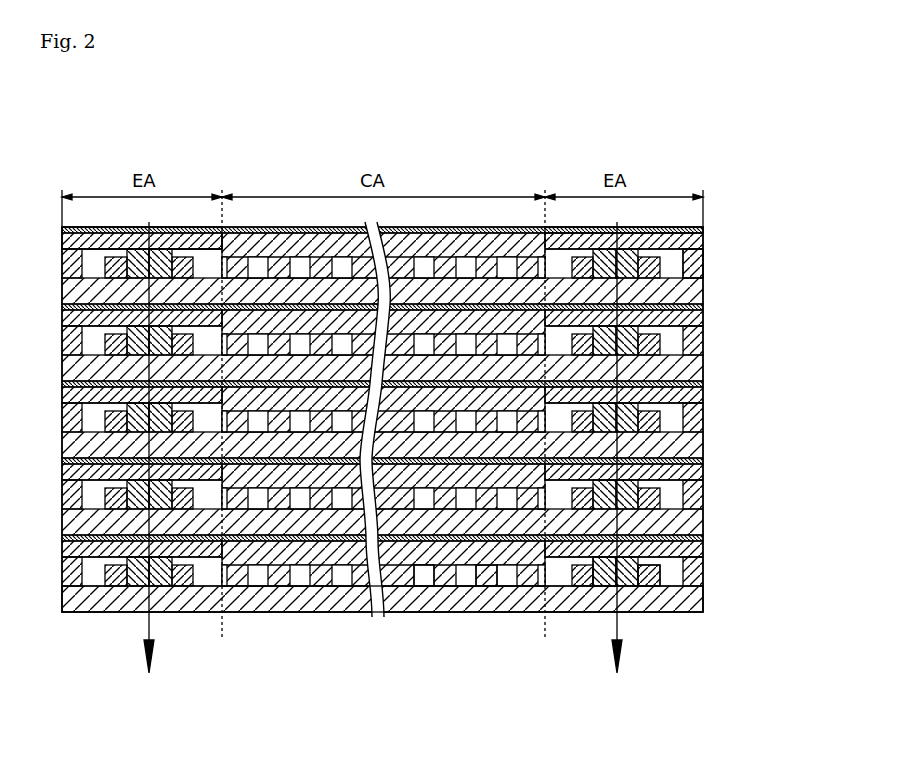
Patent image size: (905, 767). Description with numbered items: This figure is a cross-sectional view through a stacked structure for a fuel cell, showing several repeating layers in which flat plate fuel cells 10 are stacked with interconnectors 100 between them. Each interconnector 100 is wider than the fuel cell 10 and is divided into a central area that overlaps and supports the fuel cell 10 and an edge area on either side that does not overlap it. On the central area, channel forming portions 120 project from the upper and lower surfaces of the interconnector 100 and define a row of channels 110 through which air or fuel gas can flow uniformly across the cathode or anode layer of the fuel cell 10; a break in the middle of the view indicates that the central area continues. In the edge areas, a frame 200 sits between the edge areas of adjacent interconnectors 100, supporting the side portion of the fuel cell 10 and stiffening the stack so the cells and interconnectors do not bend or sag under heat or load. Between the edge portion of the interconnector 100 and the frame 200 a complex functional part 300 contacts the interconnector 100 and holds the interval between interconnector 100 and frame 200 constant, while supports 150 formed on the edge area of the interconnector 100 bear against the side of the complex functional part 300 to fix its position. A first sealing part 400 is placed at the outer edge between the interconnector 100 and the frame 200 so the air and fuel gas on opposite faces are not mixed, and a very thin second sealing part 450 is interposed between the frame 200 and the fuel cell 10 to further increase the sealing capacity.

The fuel cell 10 is at (285, 583).
The interconnector 100 is at (82, 614).
The channels 110 is at (425, 577).
The channel forming portions 120 is at (492, 573).
The supports 150 is at (650, 580).
The frame 200 is at (98, 227).
The complex functional part 300 is at (603, 580).
The first sealing part 400 is at (705, 260).
The second sealing part 450 is at (658, 227).